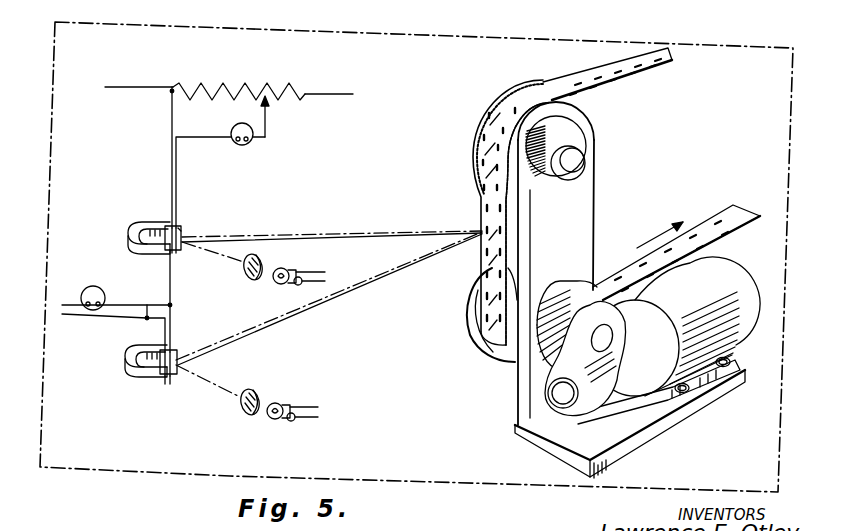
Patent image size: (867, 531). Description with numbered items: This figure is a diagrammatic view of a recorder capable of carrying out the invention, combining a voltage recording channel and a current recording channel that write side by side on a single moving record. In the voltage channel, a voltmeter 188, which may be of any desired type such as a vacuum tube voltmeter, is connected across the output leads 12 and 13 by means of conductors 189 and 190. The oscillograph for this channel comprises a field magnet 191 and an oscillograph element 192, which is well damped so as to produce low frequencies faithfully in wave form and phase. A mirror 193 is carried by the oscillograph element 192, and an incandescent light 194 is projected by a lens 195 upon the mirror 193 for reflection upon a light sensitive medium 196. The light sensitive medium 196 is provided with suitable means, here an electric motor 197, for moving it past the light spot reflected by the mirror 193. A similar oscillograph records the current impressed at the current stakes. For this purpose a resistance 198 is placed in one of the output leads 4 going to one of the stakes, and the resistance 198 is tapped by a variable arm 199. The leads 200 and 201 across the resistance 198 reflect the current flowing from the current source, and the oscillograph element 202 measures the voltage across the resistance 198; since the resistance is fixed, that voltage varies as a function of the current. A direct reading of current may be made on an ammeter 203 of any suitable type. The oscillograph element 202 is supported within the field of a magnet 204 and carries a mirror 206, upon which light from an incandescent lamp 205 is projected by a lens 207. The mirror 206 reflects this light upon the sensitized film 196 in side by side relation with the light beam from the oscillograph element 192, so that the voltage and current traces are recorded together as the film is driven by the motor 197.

The output leads 4 is at (137, 93).
The output lead 12 is at (147, 300).
The output lead 13 is at (171, 304).
The voltmeter 188 is at (93, 286).
The conductor 189 is at (110, 318).
The conductor 190 is at (126, 300).
The field magnet 191 is at (142, 374).
The oscillograph element 192 is at (172, 377).
The mirror 193 is at (166, 386).
The incandescent light 194 is at (284, 406).
The lens 195 is at (246, 414).
The light sensitive medium 196 is at (482, 256).
The electric motor 197 is at (717, 280).
The resistance 198 is at (214, 84).
The variable arm 199 is at (268, 117).
The lead 200 is at (178, 187).
The lead 201 is at (170, 170).
The oscillograph element 202 is at (181, 229).
The ammeter 203 is at (247, 146).
The magnet 204 is at (128, 240).
The incandescent lamp 205 is at (164, 253).
The mirror 206 is at (281, 286).
The lens 207 is at (249, 281).